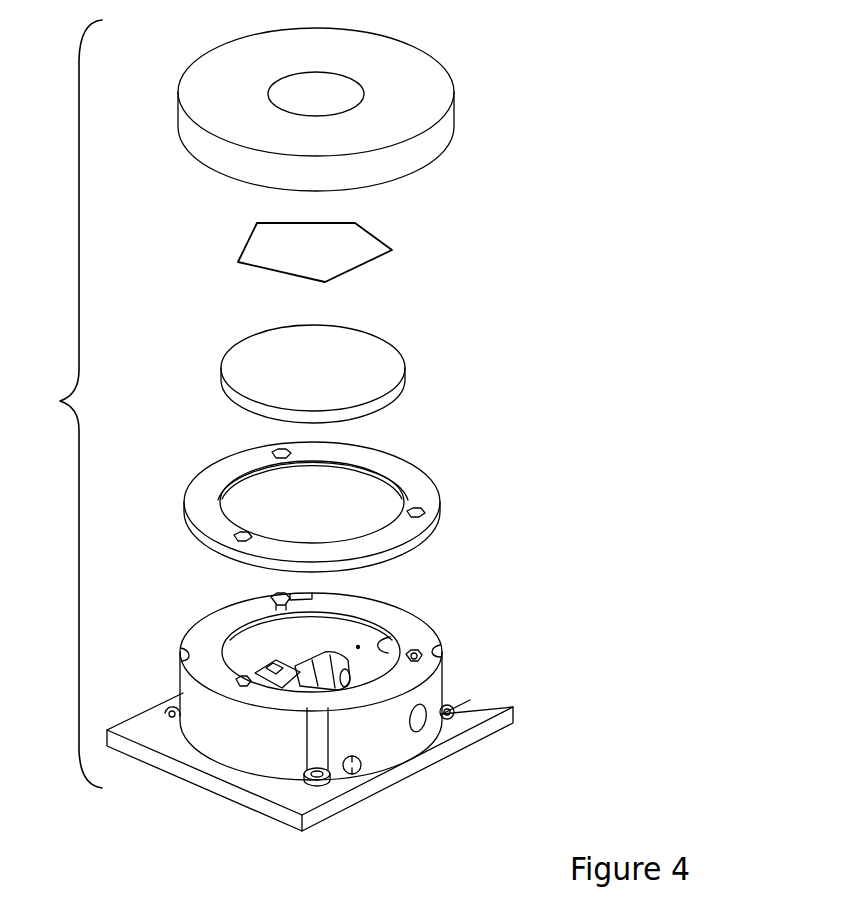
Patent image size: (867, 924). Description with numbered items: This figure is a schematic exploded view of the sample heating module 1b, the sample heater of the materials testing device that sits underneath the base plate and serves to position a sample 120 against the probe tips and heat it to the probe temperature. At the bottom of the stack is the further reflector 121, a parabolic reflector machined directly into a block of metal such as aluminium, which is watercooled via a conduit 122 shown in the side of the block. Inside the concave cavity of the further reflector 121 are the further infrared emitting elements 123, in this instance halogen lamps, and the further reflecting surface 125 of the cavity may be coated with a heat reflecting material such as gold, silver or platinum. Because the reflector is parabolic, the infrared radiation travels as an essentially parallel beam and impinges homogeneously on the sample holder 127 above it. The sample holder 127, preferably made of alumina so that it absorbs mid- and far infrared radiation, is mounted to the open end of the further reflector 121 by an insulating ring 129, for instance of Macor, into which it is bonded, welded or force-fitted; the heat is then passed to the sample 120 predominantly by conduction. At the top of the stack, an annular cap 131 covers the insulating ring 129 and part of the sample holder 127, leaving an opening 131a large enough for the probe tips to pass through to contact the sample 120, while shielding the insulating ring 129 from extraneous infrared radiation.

The sample heating module 1b is at (67, 404).
The annular cap 131 is at (389, 103).
The opening 131a is at (347, 73).
The sample 120 is at (368, 239).
The sample holder 127 is at (387, 363).
The insulating ring 129 is at (418, 493).
The further reflector 121 is at (405, 623).
The further reflecting surface 125 is at (382, 633).
The conduit 122 is at (423, 723).
The further infrared emitting elements 123 is at (300, 662).